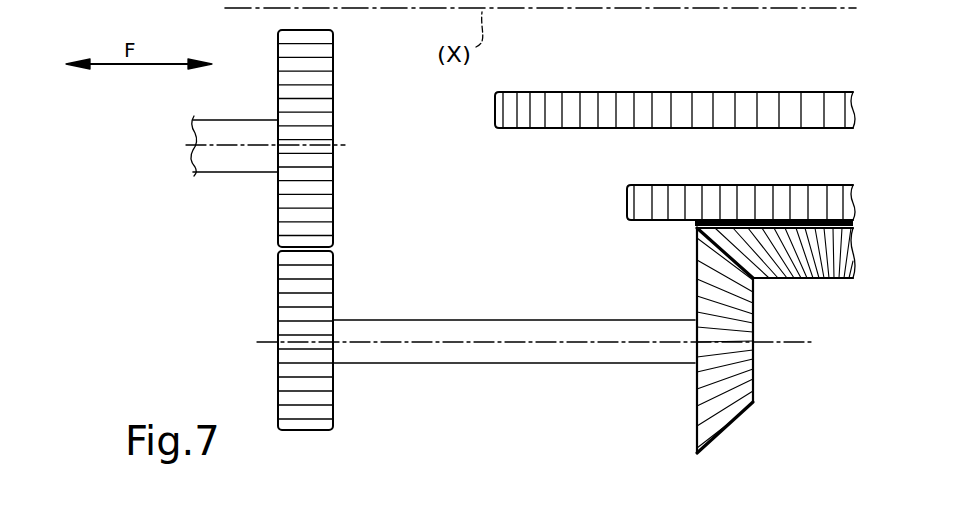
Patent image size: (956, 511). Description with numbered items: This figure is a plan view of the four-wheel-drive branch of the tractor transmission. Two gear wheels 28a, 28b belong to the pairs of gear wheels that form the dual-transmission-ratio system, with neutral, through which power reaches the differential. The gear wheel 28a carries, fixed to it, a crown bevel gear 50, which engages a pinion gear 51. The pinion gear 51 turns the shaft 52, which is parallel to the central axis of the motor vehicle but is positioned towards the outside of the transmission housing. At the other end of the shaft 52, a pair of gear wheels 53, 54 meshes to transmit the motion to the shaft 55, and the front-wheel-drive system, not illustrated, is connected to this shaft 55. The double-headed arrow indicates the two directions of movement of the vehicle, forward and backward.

The gear wheel 28a is at (642, 205).
The gear wheel 28b is at (588, 100).
The crown bevel gear 50 is at (797, 270).
The pinion gear 51 is at (729, 408).
The shaft 52 is at (497, 355).
The gear wheel 53 is at (323, 289).
The gear wheel 54 is at (323, 123).
The shaft 55 is at (227, 158).